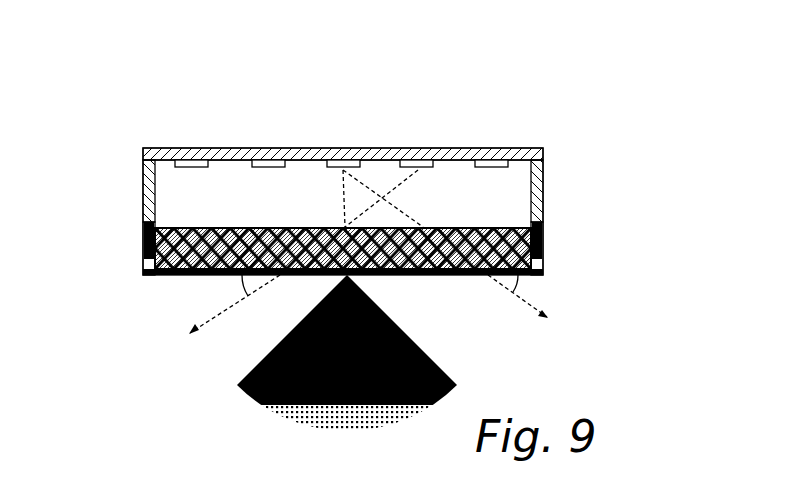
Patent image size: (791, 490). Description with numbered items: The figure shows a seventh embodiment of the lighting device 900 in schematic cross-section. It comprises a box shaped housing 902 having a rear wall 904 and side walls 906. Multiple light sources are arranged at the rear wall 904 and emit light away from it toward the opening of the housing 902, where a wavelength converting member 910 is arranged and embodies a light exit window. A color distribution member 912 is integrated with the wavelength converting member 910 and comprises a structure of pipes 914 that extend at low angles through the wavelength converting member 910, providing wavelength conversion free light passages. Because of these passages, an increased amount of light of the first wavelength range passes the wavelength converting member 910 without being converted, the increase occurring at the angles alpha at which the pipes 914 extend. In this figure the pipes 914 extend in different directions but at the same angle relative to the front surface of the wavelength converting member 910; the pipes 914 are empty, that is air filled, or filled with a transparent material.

The lighting device 900 is at (340, 100).
The housing 902 is at (398, 138).
The rear wall 904 is at (263, 147).
The side walls 906 is at (145, 195).
The wavelength converting member 910 is at (142, 267).
The color distribution member 912 is at (177, 281).
The pipes 914 is at (183, 228).